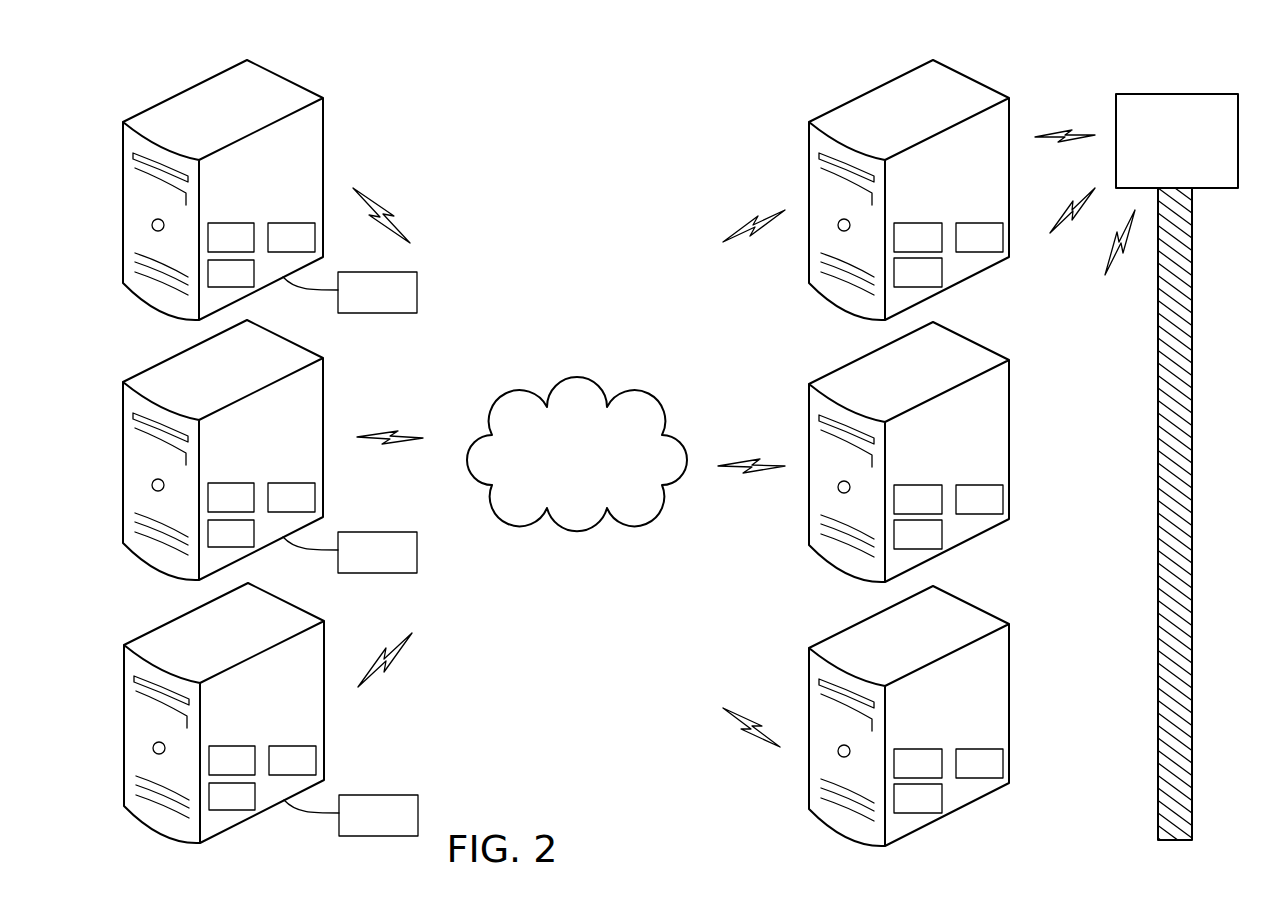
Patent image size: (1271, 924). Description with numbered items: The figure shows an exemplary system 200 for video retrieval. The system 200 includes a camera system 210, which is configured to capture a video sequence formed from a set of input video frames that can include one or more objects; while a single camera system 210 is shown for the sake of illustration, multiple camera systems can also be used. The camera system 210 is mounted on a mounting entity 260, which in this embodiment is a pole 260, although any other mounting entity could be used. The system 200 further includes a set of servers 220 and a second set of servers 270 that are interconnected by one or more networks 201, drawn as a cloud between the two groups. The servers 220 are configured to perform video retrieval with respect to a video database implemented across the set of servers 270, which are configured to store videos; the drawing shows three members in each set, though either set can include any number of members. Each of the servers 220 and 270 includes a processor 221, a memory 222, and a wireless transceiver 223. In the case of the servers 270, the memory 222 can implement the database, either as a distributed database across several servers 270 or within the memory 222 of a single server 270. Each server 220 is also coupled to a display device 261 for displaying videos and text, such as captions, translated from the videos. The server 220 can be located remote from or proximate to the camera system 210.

The system 200 is at (1165, 50).
The networks 201 is at (557, 467).
The camera system 210 is at (1157, 180).
The servers 220 is at (205, 124).
The processor 221 is at (249, 248).
The memory 222 is at (310, 248).
The wireless transceiver 223 is at (249, 284).
The mounting entity 260 is at (1156, 386).
The display device 261 is at (359, 304).
The servers 270 is at (909, 453).